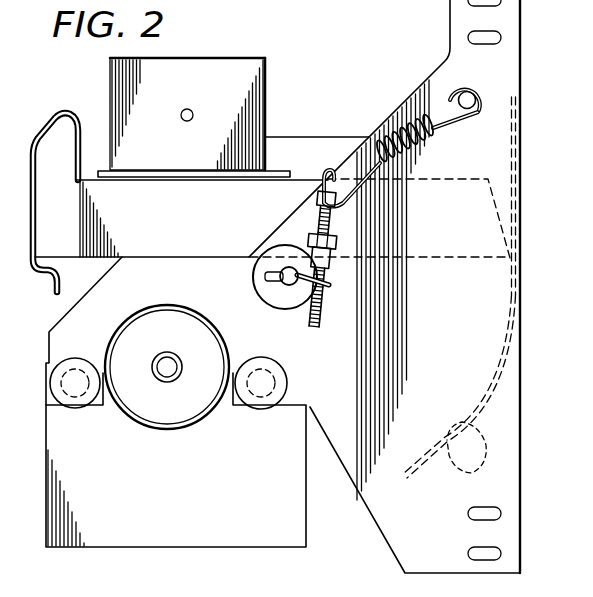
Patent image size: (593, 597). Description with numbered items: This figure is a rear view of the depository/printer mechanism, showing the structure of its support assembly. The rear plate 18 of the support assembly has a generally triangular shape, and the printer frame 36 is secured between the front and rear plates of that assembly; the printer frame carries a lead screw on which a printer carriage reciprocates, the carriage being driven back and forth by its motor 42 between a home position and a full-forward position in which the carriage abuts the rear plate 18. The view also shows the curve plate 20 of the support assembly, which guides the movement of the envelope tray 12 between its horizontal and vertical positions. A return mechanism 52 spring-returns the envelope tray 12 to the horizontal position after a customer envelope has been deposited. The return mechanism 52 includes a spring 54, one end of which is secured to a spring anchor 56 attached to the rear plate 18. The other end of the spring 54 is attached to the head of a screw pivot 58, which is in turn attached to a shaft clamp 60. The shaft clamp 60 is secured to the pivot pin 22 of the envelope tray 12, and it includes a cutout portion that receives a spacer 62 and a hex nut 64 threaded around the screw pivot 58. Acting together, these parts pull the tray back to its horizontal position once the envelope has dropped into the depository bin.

The envelope tray 12 is at (476, 257).
The rear plate 18 is at (433, 352).
The curve plate 20 is at (468, 425).
The pivot pin 22 is at (282, 293).
The printer frame 36 is at (206, 514).
The motor 42 is at (147, 412).
The return mechanism 52 is at (369, 127).
The spring 54 is at (433, 138).
The spring anchor 56 is at (470, 92).
The screw pivot 58 is at (325, 206).
The shaft clamp 60 is at (258, 284).
The spacer 62 is at (332, 266).
The hex nut 64 is at (318, 222).